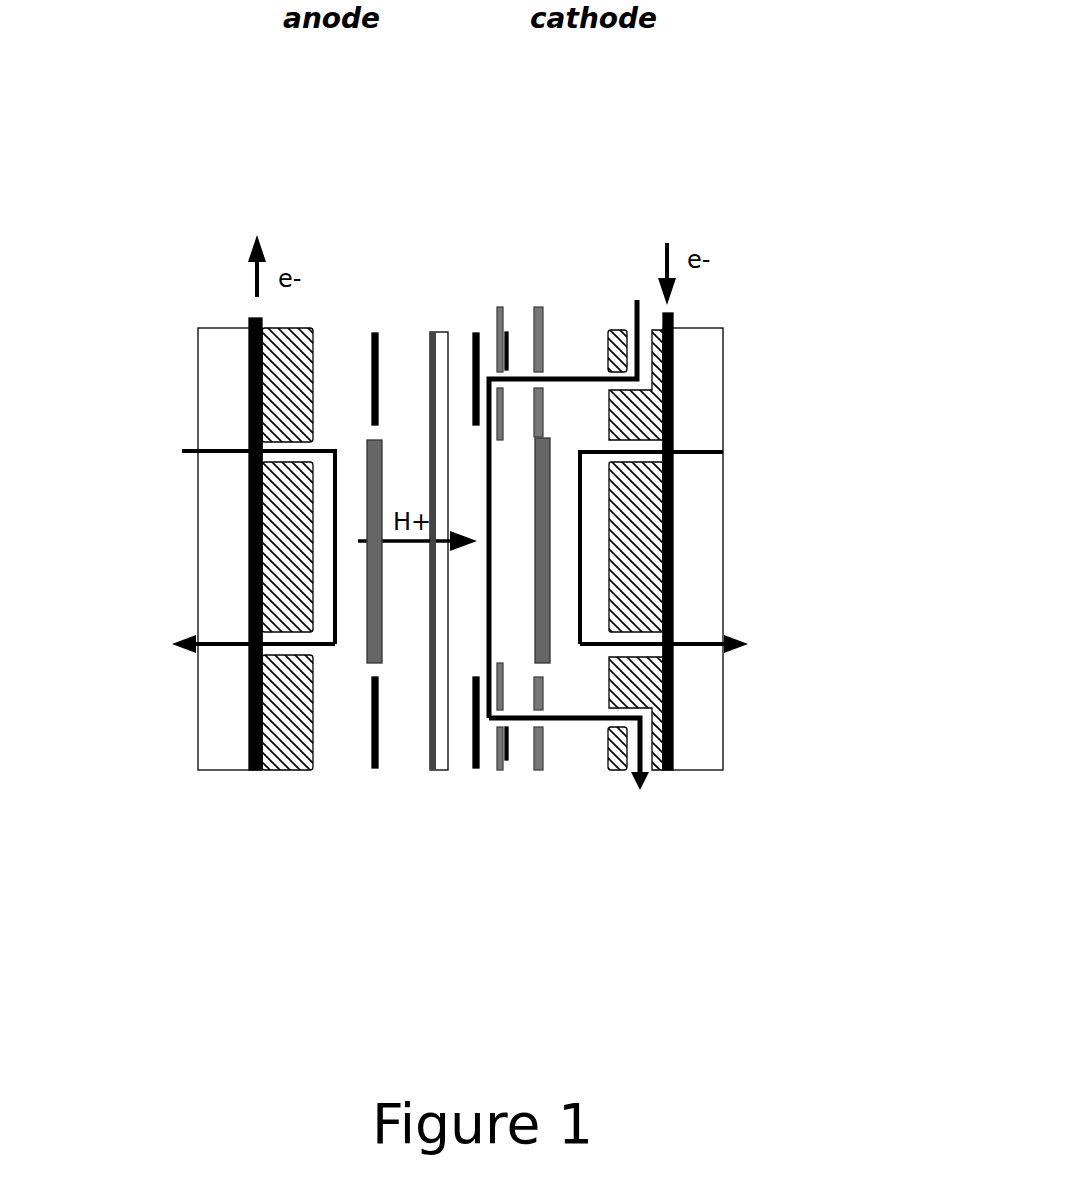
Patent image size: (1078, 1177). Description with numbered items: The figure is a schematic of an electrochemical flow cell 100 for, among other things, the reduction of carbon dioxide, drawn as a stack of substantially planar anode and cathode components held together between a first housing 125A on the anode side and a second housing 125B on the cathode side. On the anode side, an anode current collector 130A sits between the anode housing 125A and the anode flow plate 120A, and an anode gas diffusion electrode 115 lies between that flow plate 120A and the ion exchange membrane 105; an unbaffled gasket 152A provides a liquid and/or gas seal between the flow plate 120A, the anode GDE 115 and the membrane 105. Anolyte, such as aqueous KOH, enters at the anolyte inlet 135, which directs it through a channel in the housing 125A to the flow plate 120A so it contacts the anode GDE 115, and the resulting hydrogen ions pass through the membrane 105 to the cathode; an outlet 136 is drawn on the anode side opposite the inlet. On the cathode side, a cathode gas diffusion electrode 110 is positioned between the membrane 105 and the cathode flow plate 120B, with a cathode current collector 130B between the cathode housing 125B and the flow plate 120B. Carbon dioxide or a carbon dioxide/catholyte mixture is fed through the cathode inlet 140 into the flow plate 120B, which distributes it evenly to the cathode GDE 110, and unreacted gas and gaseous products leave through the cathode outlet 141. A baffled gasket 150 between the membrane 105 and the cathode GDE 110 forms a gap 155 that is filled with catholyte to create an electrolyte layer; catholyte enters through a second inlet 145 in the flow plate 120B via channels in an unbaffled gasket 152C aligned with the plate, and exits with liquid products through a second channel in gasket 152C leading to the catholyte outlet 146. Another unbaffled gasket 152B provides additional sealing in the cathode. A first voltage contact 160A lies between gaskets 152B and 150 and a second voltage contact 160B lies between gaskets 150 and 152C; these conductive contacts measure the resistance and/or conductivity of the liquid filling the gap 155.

The electrochemical flow cell 100 is at (203, 137).
The ion exchange membrane 105 is at (442, 337).
The cathode gas diffusion electrode 110 is at (545, 605).
The anode gas diffusion electrode 115 is at (375, 625).
The anode flow plate 120A is at (287, 740).
The cathode flow plate 120B is at (622, 768).
The anode housing 125A is at (208, 340).
The cathode housing 125B is at (710, 343).
The anode current collector 130A is at (252, 377).
The cathode current collector 130B is at (673, 418).
The anolyte inlet 135 is at (158, 467).
The anode outlet 136 is at (158, 658).
The cathode inlet 140 is at (800, 467).
The cathode outlet 141 is at (803, 658).
The catholyte inlet 145 is at (635, 285).
The catholyte outlet 146 is at (642, 805).
The baffled gasket 150 is at (508, 780).
The unbaffled gasket 152A is at (375, 322).
The unbaffled gasket 152B is at (475, 322).
The unbaffled gasket 152C is at (543, 333).
The gap 155 is at (512, 542).
The first voltage contact 160A is at (500, 352).
The second voltage contact 160B is at (503, 750).